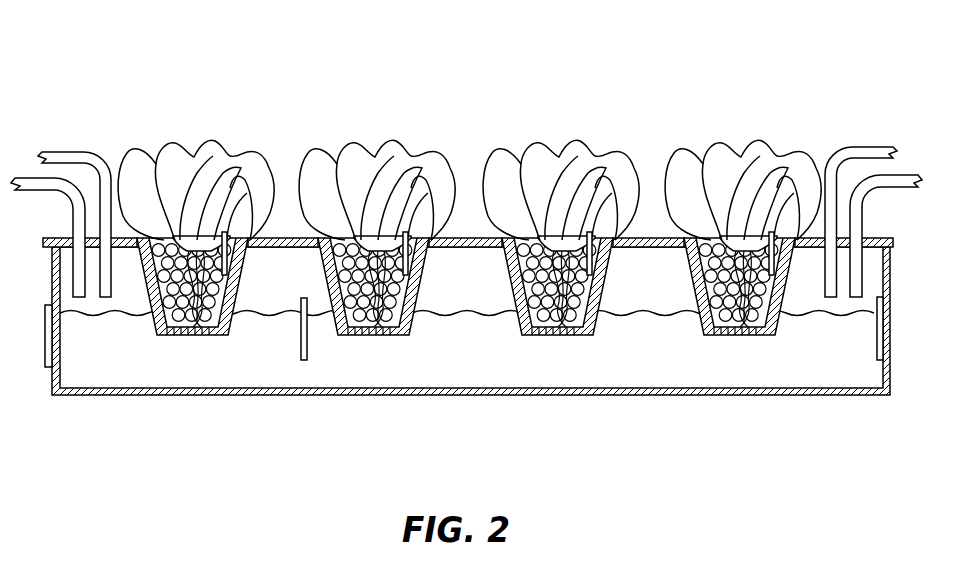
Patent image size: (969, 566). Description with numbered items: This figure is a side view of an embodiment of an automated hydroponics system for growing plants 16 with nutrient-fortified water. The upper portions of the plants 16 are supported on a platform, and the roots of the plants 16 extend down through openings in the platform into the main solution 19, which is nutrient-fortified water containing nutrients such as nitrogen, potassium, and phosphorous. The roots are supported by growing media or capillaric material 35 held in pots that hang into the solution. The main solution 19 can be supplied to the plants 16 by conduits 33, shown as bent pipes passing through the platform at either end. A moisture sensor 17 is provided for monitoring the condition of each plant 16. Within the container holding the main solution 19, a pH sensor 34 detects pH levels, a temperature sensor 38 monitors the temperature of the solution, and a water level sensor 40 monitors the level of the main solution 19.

The plants 16 is at (200, 143).
The moisture sensor 17 is at (225, 232).
The main solution 19 is at (250, 370).
The conduits 33 is at (32, 176).
The pH sensor 34 is at (875, 348).
The growing media or capillaric material 35 is at (532, 332).
The temperature sensor 38 is at (308, 330).
The water level sensor 40 is at (45, 367).